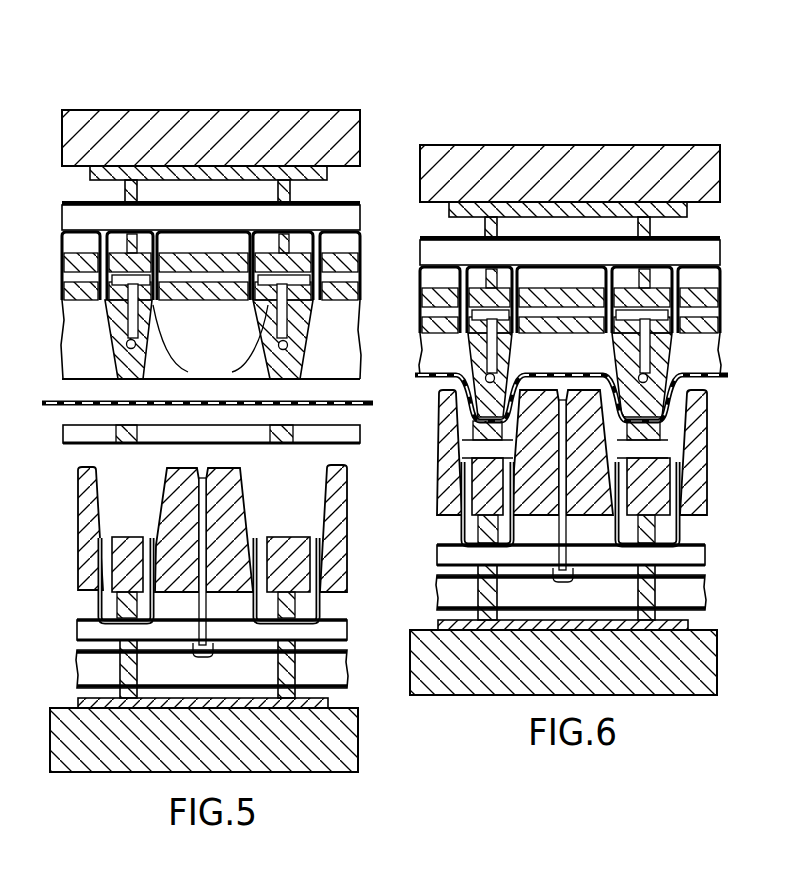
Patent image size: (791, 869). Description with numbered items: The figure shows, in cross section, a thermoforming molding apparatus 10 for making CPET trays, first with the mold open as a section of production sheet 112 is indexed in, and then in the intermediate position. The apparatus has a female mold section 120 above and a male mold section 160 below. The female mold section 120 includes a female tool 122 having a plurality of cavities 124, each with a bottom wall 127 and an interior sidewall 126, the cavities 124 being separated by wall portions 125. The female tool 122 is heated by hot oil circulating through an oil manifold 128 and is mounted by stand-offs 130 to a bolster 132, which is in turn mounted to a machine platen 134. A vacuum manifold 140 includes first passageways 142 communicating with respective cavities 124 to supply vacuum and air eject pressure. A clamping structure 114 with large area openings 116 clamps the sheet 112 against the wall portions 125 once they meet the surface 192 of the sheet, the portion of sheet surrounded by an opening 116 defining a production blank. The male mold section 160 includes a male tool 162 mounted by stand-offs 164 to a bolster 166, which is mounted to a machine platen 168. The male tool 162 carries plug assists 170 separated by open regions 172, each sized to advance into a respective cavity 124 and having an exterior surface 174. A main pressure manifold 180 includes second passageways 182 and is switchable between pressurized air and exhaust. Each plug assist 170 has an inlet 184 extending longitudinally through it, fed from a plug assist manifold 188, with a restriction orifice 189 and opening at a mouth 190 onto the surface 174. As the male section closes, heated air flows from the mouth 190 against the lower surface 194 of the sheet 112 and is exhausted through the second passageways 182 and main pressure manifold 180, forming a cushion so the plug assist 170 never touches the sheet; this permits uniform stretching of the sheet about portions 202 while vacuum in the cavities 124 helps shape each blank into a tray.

In FIG. 5, the forming apparatus 10 is at (304, 58).
In FIG. 5, the production sheet 112 is at (77, 408).
In FIG. 5, the clamping structure 114 is at (333, 443).
In FIG. 5, the large area openings 116 is at (153, 444).
In FIG. 5, the female mold section 120 is at (58, 213).
In FIG. 5, the female tool 122 is at (353, 255).
In FIG. 6, the female tool 122 is at (713, 297).
In FIG. 5, the cavities 124 is at (110, 371).
In FIG. 6, the cavities 124 is at (466, 367).
In FIG. 5, the wall portions 125 is at (123, 380).
In FIG. 5, the interior sidewall 126 is at (210, 344).
In FIG. 5, the bottom wall 127 is at (186, 300).
In FIG. 6, the bottom wall 127 is at (563, 333).
In FIG. 5, the oil manifold 128 is at (187, 280).
In FIG. 5, the stand-offs 130 is at (133, 182).
In FIG. 5, the bolster 132 is at (313, 168).
In FIG. 5, the machine platen 134 is at (200, 110).
In FIG. 6, the machine platen 134 is at (491, 150).
In FIG. 5, the vacuum manifold 140 is at (168, 230).
In FIG. 6, the vacuum manifold 140 is at (558, 266).
In FIG. 5, the first passageways 142 is at (132, 330).
In FIG. 5, the male mold section 160 is at (78, 460).
In FIG. 5, the male tool 162 is at (346, 562).
In FIG. 6, the male tool 162 is at (692, 466).
In FIG. 5, the stand-offs 164 is at (297, 678).
In FIG. 5, the bolster 166 is at (168, 703).
In FIG. 5, the machine platen 168 is at (317, 765).
In FIG. 6, the machine platen 168 is at (650, 688).
In FIG. 5, the plug assists 170 is at (92, 518).
In FIG. 5, the open regions 172 is at (141, 490).
In FIG. 5, the exterior surface 174 is at (80, 466).
In FIG. 5, the main pressure manifold 180 is at (333, 634).
In FIG. 6, the main pressure manifold 180 is at (705, 554).
In FIG. 5, the second passageways 182 is at (151, 540).
In FIG. 5, the inlet 184 is at (205, 560).
In FIG. 5, the plug assist manifold 188 is at (222, 681).
In FIG. 6, the plug assist manifold 188 is at (581, 606).
In FIG. 5, the restriction orifice 189 is at (204, 480).
In FIG. 5, the mouth 190 is at (203, 468).
In FIG. 5, the surface 192 is at (305, 403).
In FIG. 5, the lower surface 194 is at (363, 407).
In FIG. 6, the portions 202 is at (468, 418).